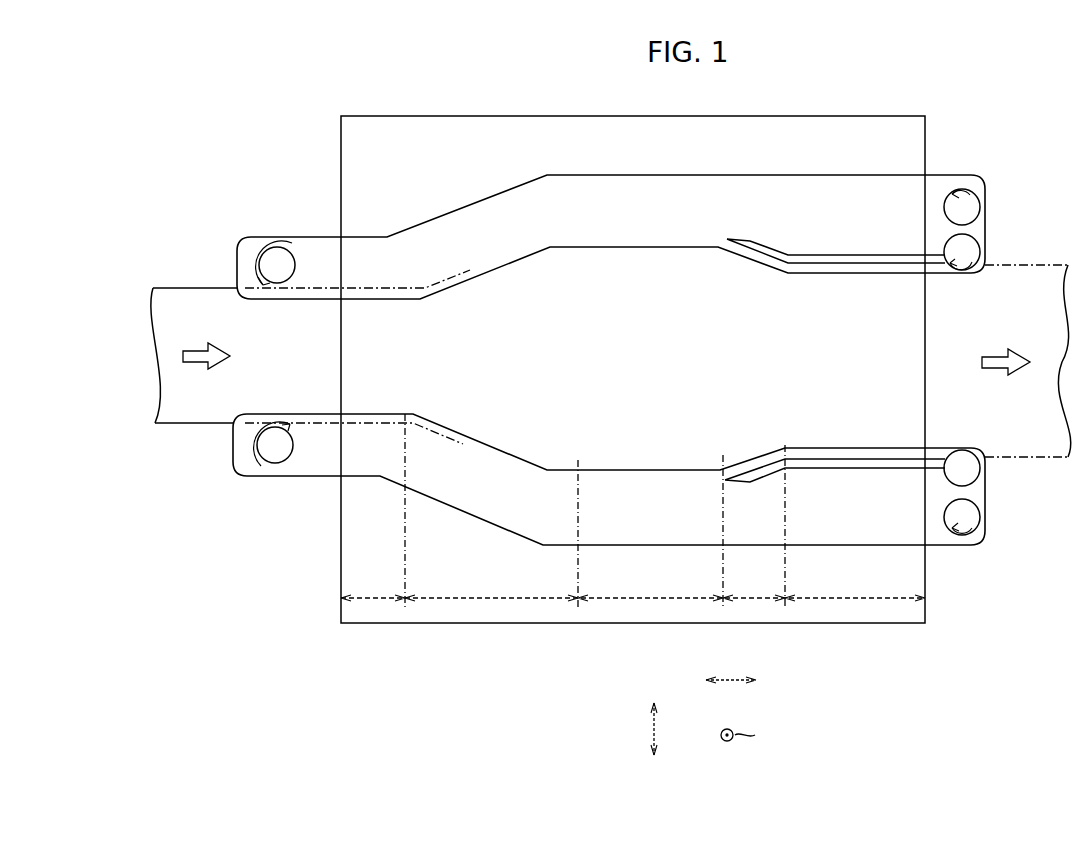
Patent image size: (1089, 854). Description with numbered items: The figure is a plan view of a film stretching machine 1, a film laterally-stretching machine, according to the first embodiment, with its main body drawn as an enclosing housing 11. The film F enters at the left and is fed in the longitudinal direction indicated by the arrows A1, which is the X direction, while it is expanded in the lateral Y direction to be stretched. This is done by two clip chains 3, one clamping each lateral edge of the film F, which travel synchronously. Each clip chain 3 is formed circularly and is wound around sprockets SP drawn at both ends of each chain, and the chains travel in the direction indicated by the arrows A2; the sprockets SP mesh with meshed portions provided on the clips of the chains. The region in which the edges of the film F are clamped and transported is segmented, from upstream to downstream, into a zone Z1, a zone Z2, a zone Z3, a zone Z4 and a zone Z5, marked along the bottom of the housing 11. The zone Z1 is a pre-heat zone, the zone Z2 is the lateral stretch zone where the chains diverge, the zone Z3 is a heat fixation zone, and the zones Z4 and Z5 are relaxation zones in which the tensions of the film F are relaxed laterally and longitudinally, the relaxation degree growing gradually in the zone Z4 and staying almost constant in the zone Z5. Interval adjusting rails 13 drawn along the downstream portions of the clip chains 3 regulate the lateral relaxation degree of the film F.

The film stretching machine 1 is at (994, 117).
The housing / processing chamber 11 is at (493, 624).
The clip chain 3 is at (642, 250).
The interval adjusting rail 13 is at (845, 254).
The film F is at (175, 425).
The sprocket SP is at (283, 236).
The arrows indicating film feeding direction A1 is at (203, 346).
The arrows indicating clip chain travel direction A2 is at (250, 262).
The zone Z1 is at (379, 592).
The zone Z2 is at (489, 592).
The zone Z3 is at (662, 592).
The zone Z4 is at (762, 592).
The zone Z5 is at (869, 592).